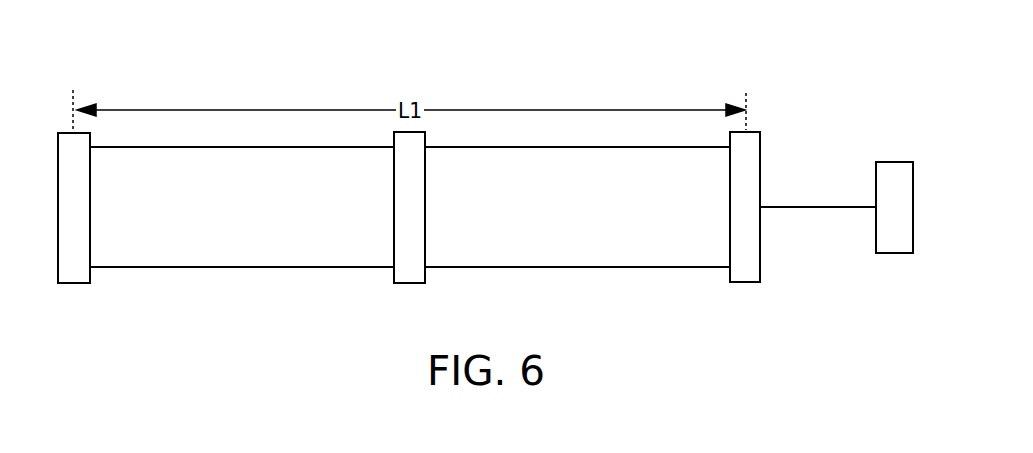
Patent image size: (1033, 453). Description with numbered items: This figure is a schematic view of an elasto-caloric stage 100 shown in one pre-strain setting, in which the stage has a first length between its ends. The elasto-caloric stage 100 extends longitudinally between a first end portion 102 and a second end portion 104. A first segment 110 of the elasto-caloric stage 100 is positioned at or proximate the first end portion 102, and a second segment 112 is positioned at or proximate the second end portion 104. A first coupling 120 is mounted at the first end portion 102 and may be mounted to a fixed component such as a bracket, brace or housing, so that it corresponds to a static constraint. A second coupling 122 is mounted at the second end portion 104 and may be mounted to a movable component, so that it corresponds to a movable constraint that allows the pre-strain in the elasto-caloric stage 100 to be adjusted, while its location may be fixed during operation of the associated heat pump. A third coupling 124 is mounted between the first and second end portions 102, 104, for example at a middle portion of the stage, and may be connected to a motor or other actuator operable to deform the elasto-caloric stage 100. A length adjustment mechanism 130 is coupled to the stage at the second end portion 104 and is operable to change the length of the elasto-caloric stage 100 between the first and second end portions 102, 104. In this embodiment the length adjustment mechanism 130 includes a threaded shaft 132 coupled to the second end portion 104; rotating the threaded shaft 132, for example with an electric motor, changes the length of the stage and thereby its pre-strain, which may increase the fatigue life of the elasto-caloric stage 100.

The elasto-caloric stage 100 is at (79, 46).
The first end portion 102 is at (74, 302).
The second end portion 104 is at (744, 306).
The first segment 110 is at (247, 245).
The second segment 112 is at (568, 243).
The first coupling 120 is at (78, 218).
The second coupling 122 is at (748, 205).
The third coupling 124 is at (407, 208).
The length adjustment mechanism 130 is at (895, 162).
The threaded shaft 132 is at (818, 207).